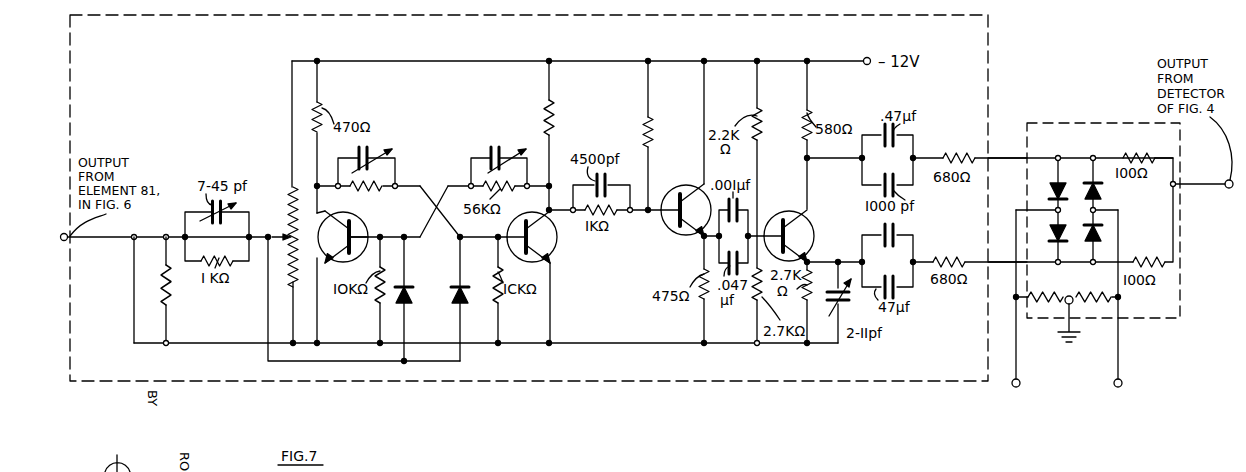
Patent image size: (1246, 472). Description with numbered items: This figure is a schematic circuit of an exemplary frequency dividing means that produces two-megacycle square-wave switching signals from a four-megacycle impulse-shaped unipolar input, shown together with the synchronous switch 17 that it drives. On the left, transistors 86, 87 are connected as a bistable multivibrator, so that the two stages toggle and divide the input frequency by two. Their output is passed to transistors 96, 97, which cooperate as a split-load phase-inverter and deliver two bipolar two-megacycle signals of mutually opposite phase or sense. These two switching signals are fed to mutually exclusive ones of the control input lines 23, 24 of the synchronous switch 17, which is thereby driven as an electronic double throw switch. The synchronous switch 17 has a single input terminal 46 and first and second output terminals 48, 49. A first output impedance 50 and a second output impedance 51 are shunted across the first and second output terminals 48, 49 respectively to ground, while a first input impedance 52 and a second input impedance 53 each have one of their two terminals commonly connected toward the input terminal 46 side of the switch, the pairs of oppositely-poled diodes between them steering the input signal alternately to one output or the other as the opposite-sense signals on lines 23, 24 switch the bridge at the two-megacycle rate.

The synchronous switch 17 is at (1181, 318).
The control input line 23 is at (1012, 262).
The control input line 24 is at (1001, 157).
The input terminal 46 is at (1185, 184).
The first output terminal 48 is at (1013, 387).
The second output terminal 49 is at (1116, 387).
The first output impedance 50 is at (1053, 292).
The second output impedance 51 is at (1095, 292).
The first input impedance 52 is at (1152, 155).
The second input impedance 53 is at (1137, 259).
The transistor 86 is at (353, 224).
The transistor 87 is at (546, 257).
The transistor 96 is at (691, 187).
The transistor 97 is at (806, 224).